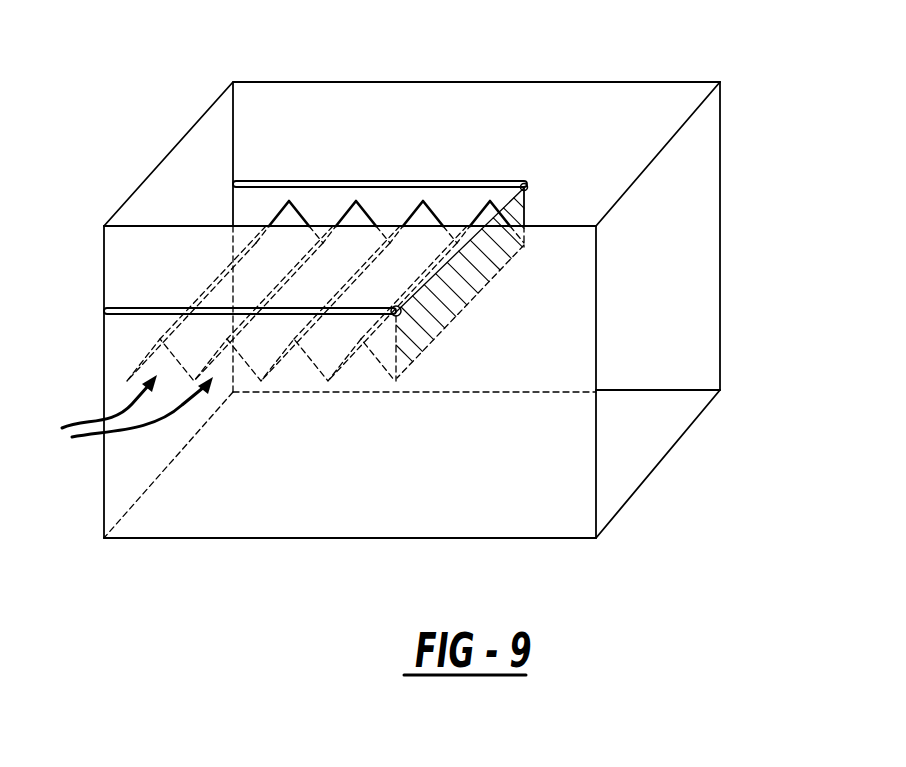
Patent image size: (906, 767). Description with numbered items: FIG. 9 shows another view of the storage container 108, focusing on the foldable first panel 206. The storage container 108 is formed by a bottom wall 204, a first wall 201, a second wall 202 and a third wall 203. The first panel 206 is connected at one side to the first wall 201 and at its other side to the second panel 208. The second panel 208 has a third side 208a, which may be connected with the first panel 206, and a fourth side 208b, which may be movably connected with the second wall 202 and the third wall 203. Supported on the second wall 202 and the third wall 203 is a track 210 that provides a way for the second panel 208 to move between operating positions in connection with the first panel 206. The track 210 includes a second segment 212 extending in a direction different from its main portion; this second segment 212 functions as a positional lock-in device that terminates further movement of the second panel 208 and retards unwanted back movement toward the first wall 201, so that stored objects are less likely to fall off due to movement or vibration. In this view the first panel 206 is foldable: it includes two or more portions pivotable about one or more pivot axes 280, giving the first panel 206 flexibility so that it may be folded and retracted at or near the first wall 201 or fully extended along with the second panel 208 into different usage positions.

The storage container 108 is at (158, 566).
The first wall 201 is at (193, 160).
The second wall 202 is at (118, 257).
The third wall 203 is at (647, 120).
The bottom wall 204 is at (618, 450).
The first panel 206 is at (300, 408).
The second panel 208 is at (473, 265).
The third side 208a is at (493, 279).
The fourth side 208b is at (495, 208).
The track 210 is at (417, 181).
The second segment 212 is at (530, 188).
The pivot axis 280 is at (121, 423).